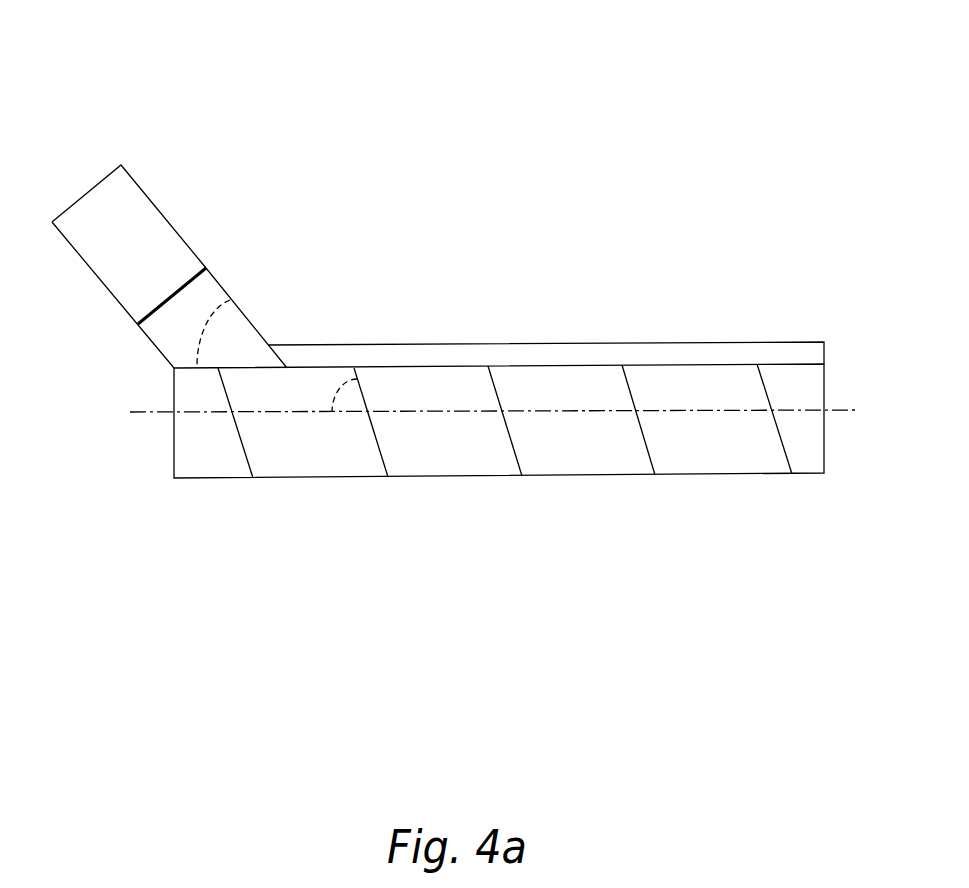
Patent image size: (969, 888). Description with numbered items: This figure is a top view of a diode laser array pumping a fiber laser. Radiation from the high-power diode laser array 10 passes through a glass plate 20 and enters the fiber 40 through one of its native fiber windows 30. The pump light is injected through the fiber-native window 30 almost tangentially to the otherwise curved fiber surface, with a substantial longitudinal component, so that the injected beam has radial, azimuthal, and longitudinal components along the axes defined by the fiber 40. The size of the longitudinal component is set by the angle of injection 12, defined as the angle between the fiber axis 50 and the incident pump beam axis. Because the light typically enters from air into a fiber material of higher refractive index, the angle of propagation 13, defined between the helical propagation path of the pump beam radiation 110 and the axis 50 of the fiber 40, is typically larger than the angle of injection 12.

The high-power diode laser array 10 is at (134, 245).
The angle of injection 12 is at (245, 345).
The angle of propagation 13 is at (352, 400).
The glass plate 20 is at (184, 316).
The fiber-native window 30 is at (557, 365).
The fiber 40 is at (573, 445).
The fiber axis 50 is at (710, 408).
The helical propagation path of the pump beam radiation 110 is at (241, 443).